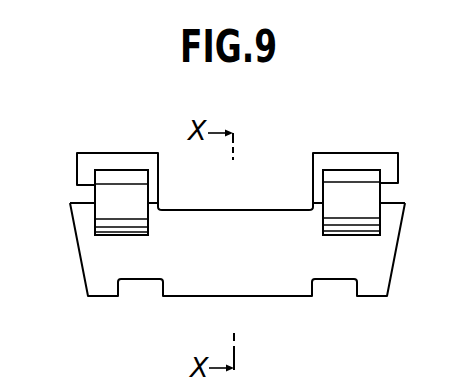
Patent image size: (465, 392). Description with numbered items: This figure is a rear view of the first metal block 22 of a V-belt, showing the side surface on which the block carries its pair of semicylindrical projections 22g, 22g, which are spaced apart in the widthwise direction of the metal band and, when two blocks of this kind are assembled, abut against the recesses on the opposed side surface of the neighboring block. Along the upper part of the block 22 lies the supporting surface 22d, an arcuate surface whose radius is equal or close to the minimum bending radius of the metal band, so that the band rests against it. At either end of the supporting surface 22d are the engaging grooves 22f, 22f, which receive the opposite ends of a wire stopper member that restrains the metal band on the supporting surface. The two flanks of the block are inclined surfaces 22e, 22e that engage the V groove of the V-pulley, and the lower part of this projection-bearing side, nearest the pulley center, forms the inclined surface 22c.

The first metal block 22 is at (263, 195).
The inclined surface 22c is at (274, 288).
The supporting surface 22d is at (217, 208).
The inclined surfaces 22e is at (81, 263).
The engaging grooves 22f is at (77, 186).
The semicylindrical projections 22g is at (118, 195).